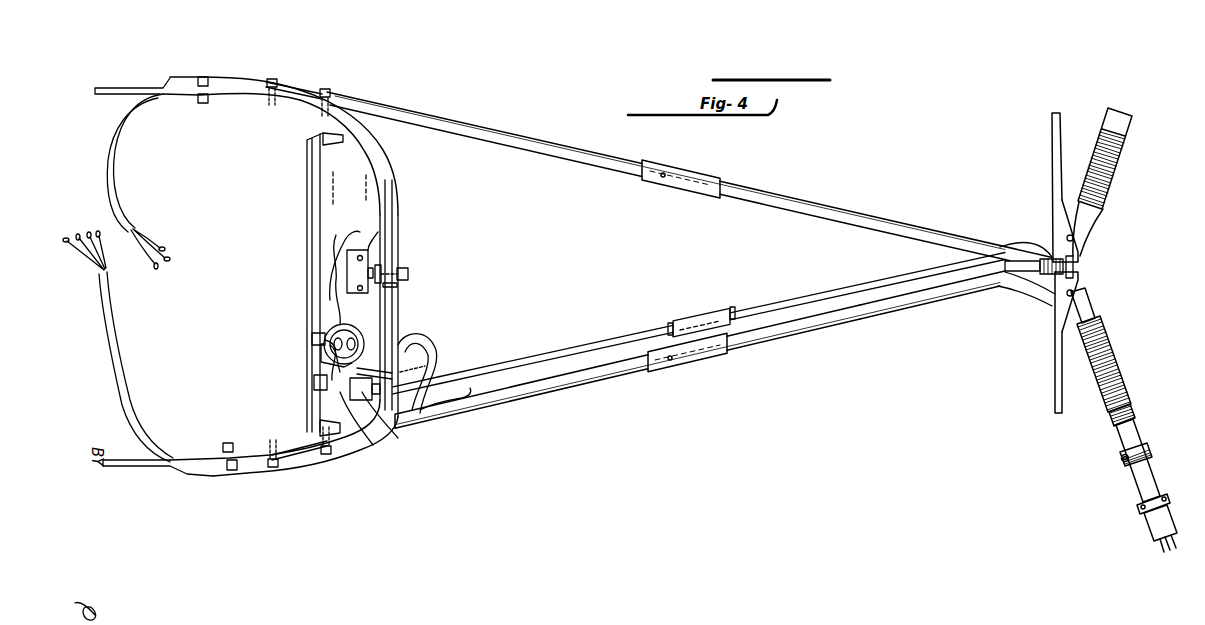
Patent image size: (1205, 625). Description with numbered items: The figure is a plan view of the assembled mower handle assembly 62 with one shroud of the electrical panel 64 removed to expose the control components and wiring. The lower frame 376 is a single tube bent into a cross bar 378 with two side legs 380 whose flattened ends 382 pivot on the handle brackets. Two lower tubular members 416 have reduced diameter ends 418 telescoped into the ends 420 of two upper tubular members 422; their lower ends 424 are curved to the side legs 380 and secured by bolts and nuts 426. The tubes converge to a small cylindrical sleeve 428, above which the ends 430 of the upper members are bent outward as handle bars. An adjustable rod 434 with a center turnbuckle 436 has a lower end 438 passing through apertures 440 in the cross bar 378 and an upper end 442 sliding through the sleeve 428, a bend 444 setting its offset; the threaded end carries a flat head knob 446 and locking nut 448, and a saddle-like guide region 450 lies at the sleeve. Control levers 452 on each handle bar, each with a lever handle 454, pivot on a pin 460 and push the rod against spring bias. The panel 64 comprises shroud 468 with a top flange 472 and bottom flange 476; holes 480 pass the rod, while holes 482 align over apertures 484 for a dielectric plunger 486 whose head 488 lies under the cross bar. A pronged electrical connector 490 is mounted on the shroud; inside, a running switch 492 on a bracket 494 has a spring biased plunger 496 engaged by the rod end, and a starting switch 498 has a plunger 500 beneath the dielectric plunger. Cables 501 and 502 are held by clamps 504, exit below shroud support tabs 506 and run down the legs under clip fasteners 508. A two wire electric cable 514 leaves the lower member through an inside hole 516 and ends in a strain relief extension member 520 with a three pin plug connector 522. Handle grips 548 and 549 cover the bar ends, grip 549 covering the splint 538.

The handle assembly 62 is at (513, 123).
The panel 64 is at (300, 276).
The lower frame 376 is at (376, 172).
The cross bar 378 is at (398, 222).
The side legs 380 is at (227, 85).
The ends 382 is at (147, 68).
The lower tubular members 416 is at (573, 155).
The reduced diameter ends 418 is at (677, 170).
The ends 420 is at (707, 178).
The upper tubular members 422 is at (823, 210).
The lower ends 424 is at (307, 90).
The bolts and nuts 426 is at (273, 83).
The cylindrical sleeve 428 is at (1020, 280).
The ends (handle bars) 430 is at (1093, 223).
The adjustable rod 434 is at (624, 336).
The center turnbuckle 436 is at (717, 293).
The lower end 438 is at (550, 347).
The apertures 440 is at (432, 360).
The upper end 442 is at (1050, 255).
The bend 444 is at (970, 272).
The flat head knob 446 is at (1082, 263).
The locking nut 448 is at (1050, 288).
The saddle 450 is at (1030, 263).
The control levers 452 is at (1055, 210).
The lever handle 454 is at (1053, 132).
The pin 460 is at (1080, 243).
The shroud 468 is at (318, 215).
The top flange 472 is at (397, 245).
The bottom flange 476 is at (307, 302).
The holes or notches 480 is at (427, 380).
The holes or notches 482 is at (400, 270).
The apertures 484 is at (410, 278).
The dielectric plunger 486 is at (410, 273).
The head 488 is at (398, 286).
The pronged electrical connector 490 is at (340, 327).
The running switch 492 is at (370, 437).
The bracket 494 is at (377, 340).
The spring biased plunger 496 is at (389, 430).
The starting switch 498 is at (350, 270).
The spring biased plunger 500 is at (377, 236).
The cable 501 is at (177, 103).
The cable 502 is at (157, 437).
The clamps 504 is at (307, 383).
The shroud support tabs 506 is at (335, 141).
The clip fasteners 508 is at (203, 103).
The two wire electric cable 514 is at (432, 345).
The inside hole 516 is at (460, 397).
The strain relief extension member 520 is at (1117, 447).
The three pin plug connector 522 is at (1160, 520).
The splint 538 is at (1137, 425).
The handle grip 548 is at (1117, 162).
The handle grip 549 is at (1113, 360).